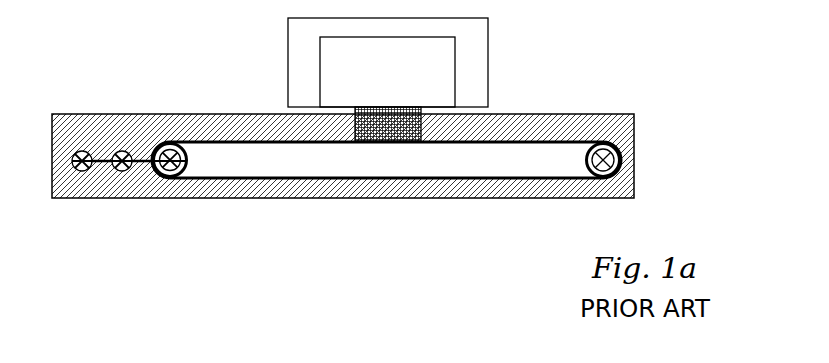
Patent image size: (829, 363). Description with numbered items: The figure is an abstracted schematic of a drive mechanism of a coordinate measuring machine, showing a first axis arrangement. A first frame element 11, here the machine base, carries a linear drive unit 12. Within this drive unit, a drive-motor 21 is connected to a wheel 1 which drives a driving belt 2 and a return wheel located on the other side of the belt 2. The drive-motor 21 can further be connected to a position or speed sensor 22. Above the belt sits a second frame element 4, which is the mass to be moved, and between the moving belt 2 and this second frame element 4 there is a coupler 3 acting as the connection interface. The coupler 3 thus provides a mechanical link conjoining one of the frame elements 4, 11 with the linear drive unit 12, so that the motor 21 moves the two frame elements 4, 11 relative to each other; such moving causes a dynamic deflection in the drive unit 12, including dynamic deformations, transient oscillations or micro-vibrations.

The wheel 1 is at (164, 170).
The driving belt 2 is at (308, 177).
The coupler 3 is at (370, 132).
The second frame element 4 is at (347, 67).
The first frame element 11 is at (430, 198).
The linear drive unit 12 is at (583, 70).
The drive-motor 21 is at (122, 170).
The position or speed sensor 22 is at (85, 170).